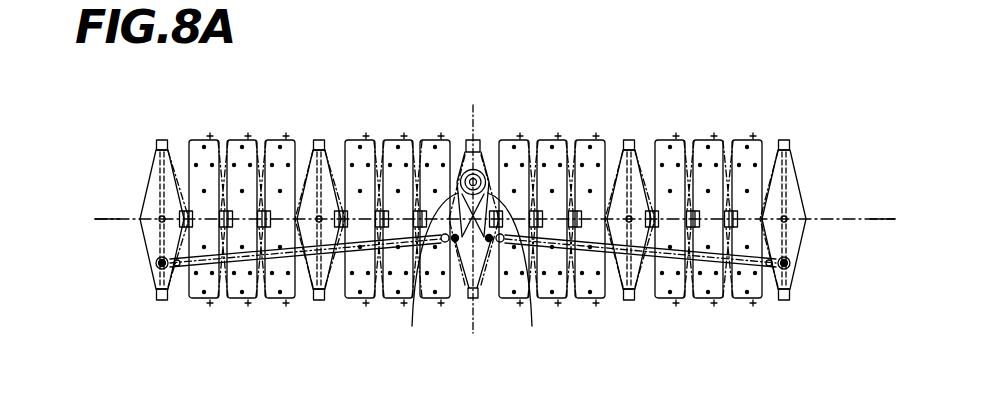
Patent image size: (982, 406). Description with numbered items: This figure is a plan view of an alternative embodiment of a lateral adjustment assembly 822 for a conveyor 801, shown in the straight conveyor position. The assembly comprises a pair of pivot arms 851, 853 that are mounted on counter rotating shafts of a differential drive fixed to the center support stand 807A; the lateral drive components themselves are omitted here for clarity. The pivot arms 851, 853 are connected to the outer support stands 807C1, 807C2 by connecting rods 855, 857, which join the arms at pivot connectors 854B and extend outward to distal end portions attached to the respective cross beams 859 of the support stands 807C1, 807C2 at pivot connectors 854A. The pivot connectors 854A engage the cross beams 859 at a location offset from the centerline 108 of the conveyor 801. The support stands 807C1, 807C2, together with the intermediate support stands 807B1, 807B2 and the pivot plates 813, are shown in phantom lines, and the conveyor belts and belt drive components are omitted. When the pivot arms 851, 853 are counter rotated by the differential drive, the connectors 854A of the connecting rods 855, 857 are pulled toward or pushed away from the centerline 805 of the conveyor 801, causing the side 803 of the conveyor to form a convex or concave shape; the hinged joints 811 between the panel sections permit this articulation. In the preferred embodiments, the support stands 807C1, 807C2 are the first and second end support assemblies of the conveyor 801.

The conveyor 801 is at (617, 101).
The side 803 is at (243, 138).
The centerline 805 is at (474, 112).
The center support stand 807A is at (491, 138).
The support stand 807B1 is at (705, 119).
The support stand 807B2 is at (316, 138).
The support stand 807C1 is at (794, 141).
The support stand 807C2 is at (156, 140).
The hinge 811 is at (706, 152).
The pivot plate 813 is at (747, 300).
The lateral adjustment assembly 822 is at (432, 335).
The pivot arm 851 is at (532, 326).
The pivot arm 853 is at (412, 326).
The pivot connector 854A is at (790, 265).
The pivot connector 854B is at (458, 242).
The connecting rod 855 is at (703, 298).
The connecting rod 857 is at (275, 298).
The cross beam 859 is at (790, 168).
The centerline 108 is at (810, 218).